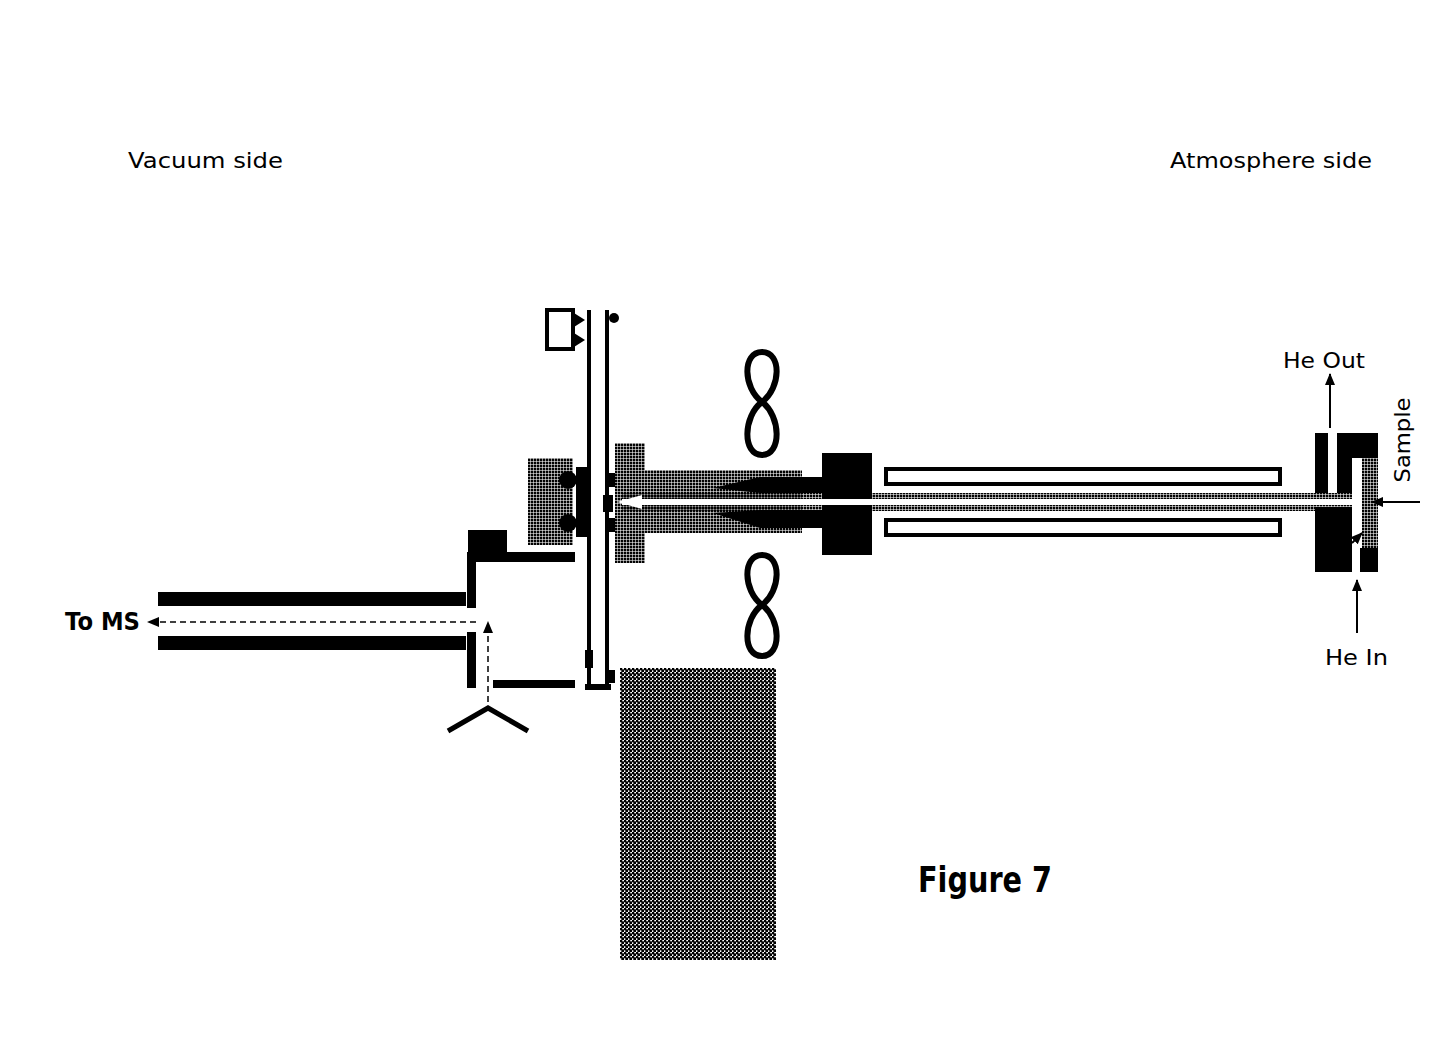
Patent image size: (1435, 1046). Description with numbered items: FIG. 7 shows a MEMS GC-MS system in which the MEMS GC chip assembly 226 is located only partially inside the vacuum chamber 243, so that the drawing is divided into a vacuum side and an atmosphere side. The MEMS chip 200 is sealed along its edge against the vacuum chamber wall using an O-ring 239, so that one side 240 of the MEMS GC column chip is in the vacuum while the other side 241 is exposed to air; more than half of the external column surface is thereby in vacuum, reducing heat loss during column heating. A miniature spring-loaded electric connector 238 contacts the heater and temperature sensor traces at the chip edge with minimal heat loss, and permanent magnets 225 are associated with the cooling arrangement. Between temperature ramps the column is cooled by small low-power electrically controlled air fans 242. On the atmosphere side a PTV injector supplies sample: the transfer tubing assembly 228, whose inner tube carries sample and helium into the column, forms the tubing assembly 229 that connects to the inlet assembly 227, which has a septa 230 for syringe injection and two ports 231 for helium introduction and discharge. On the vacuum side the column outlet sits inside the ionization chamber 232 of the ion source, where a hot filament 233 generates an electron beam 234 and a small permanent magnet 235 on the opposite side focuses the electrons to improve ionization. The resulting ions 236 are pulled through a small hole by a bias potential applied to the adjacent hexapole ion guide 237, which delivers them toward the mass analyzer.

The MEMS chip 200 is at (573, 439).
The permanent magnets 225 is at (814, 165).
The MEMS GC chip assembly 226 is at (1108, 320).
The inlet assembly 227 is at (1302, 471).
The transfer tubing assembly 228 is at (1054, 540).
The tubing assembly 229 is at (878, 485).
The septa 230 is at (1316, 556).
The ports 231 is at (1323, 427).
The ionization chamber 232 is at (464, 684).
The hot filament 233 is at (488, 738).
The electron beam 234 is at (481, 653).
The permanent magnet 235 is at (478, 527).
The ions 236 is at (262, 627).
The hexapole ion guide 237 is at (265, 589).
The spring-loaded electric connector 238 is at (569, 304).
The O-ring 239 is at (613, 304).
The vacuum side of the MEMS GC column chip 240 is at (583, 392).
The air side of the MEMS GC column chip 241 is at (613, 390).
The air fans 242 is at (786, 347).
The vacuum chamber 243 is at (784, 117).